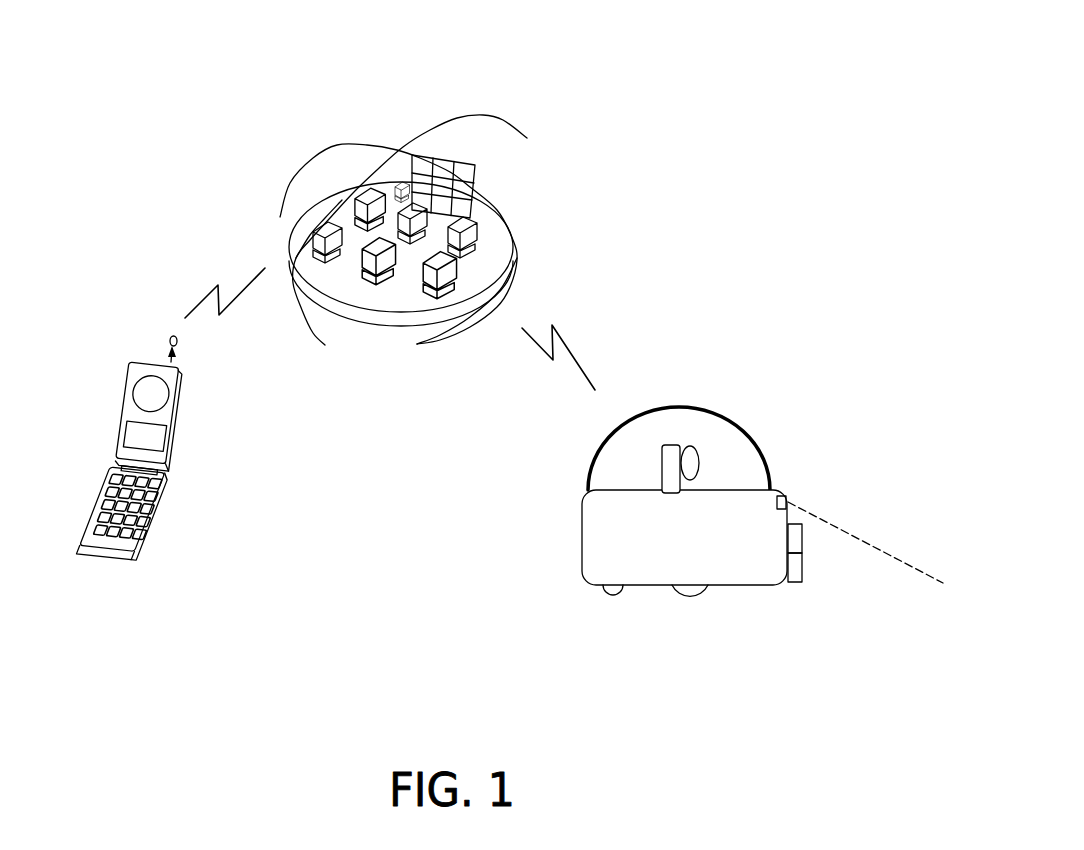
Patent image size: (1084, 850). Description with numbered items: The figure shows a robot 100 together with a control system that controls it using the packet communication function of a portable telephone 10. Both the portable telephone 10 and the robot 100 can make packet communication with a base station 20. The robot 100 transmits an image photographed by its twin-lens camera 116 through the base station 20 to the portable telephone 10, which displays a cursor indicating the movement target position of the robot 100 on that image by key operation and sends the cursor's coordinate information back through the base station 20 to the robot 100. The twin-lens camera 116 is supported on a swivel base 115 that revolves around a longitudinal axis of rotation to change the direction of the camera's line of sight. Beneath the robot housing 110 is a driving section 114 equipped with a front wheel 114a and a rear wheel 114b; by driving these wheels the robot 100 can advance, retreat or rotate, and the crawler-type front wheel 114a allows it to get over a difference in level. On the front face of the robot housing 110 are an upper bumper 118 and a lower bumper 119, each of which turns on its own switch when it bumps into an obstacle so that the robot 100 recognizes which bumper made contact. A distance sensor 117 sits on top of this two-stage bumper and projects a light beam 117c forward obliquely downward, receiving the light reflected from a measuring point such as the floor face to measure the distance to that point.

The portable telephone 10 is at (96, 378).
The base station 20 is at (503, 78).
The robot 100 is at (758, 389).
The robot housing 110 is at (777, 492).
The driving section 114 is at (724, 611).
The front wheel 114a is at (678, 597).
The rear wheel 114b is at (602, 595).
The swivel base 115 is at (673, 445).
The twin-lens camera 116 is at (700, 451).
The distance sensor 117 is at (787, 498).
The light beam 117c is at (848, 533).
The upper bumper 118 is at (803, 540).
The lower bumper 119 is at (803, 570).